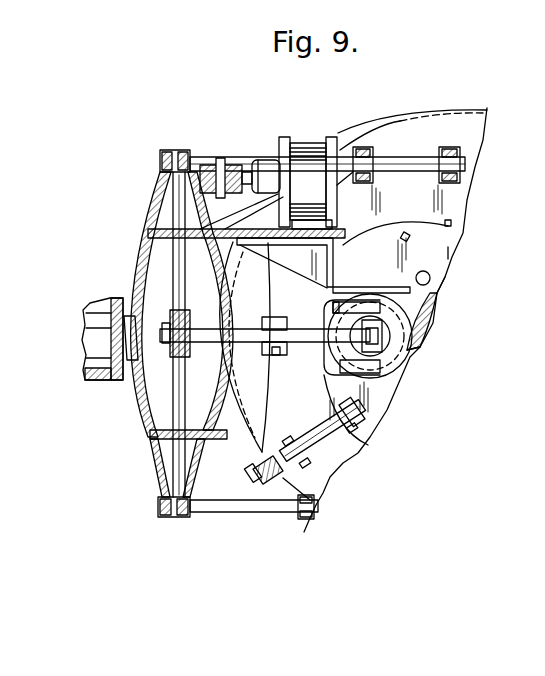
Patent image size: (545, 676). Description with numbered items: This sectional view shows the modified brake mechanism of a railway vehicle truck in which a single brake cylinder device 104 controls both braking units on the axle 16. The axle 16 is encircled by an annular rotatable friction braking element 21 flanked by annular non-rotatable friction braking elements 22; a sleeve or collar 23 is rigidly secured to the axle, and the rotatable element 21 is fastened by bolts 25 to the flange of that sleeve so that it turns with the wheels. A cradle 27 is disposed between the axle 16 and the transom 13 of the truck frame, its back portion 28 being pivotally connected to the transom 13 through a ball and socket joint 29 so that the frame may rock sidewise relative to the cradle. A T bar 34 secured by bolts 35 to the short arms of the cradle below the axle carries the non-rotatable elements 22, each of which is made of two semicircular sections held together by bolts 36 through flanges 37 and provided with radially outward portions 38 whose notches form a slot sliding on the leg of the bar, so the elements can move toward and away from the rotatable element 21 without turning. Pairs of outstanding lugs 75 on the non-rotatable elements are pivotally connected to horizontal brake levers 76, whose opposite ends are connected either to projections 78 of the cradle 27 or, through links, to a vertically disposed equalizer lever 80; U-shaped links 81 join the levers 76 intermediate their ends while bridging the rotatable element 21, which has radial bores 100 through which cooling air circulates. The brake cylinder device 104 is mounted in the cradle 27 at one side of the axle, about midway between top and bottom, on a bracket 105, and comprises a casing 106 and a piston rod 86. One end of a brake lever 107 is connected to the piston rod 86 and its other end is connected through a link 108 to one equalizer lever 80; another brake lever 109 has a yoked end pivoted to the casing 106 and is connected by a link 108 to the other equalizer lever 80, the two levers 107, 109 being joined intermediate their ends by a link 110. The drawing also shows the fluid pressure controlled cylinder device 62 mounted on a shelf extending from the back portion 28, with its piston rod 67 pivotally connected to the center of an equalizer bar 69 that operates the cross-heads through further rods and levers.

The transom 13 is at (115, 299).
The axle 16 is at (430, 335).
The annular rotatable friction braking element 21 is at (448, 253).
The annular non-rotatable friction braking element 22 is at (452, 201).
The sleeve or collar 23 is at (437, 305).
The bolts 25 is at (430, 279).
The cradle 27 is at (217, 406).
The back portion 28 is at (138, 396).
The ball and socket joint 29 is at (118, 329).
The T bar 34 is at (262, 460).
The bolts 35 is at (272, 484).
The bolts 36 is at (335, 404).
The flanges 37 is at (332, 434).
The radially outwardly extending portion 38 is at (280, 422).
The fluid pressure controlled cylinder device 62 is at (301, 150).
The piston rod 67 is at (266, 160).
The equalizer bar 69 is at (212, 165).
The outstanding lugs 75 is at (460, 157).
The brake lever 76 is at (385, 163).
The projections 78 is at (165, 465).
The equalizer lever 80 is at (173, 258).
The links 81 is at (364, 178).
The piston rod 86 is at (457, 372).
The radial bores 100 is at (420, 230).
The brake cylinder device 104 is at (390, 368).
The bracket 105 is at (341, 253).
The casing 106 is at (384, 358).
The brake lever 107 is at (340, 347).
The link 108 is at (205, 316).
The brake lever 109 is at (333, 310).
The link 110 is at (265, 335).